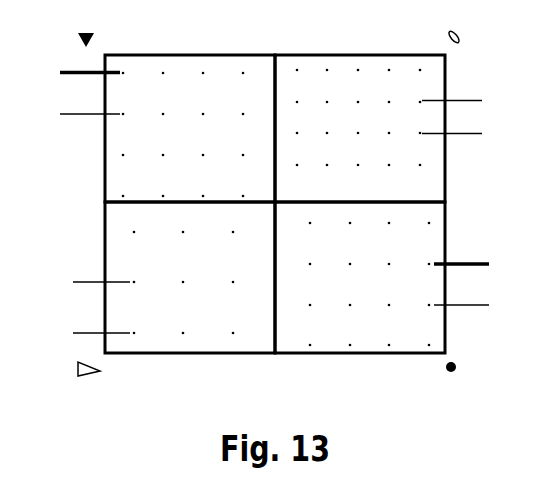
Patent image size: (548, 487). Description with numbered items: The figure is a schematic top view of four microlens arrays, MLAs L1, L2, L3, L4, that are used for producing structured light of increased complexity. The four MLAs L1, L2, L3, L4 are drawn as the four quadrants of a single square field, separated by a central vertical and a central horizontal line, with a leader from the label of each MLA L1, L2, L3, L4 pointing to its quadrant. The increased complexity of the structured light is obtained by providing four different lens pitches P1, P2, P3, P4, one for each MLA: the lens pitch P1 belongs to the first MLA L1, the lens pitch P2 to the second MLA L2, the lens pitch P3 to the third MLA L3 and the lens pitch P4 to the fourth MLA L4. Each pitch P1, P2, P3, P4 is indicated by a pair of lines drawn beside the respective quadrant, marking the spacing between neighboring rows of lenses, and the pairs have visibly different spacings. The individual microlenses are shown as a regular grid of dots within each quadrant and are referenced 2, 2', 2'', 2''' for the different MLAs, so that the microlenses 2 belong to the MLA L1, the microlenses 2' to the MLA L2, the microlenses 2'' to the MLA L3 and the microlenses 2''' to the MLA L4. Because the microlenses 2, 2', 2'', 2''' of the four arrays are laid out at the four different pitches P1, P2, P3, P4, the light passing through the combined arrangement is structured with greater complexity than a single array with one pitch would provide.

The MLA L1 is at (192, 55).
The MLA L2 is at (356, 55).
The MLA L3 is at (190, 354).
The MLA L4 is at (355, 354).
The lens pitch P1 is at (81, 94).
The lens pitch P2 is at (466, 117).
The lens pitch P3 is at (88, 307).
The lens pitch P4 is at (481, 284).
The microlenses 2 is at (153, 135).
The microlenses 2' is at (396, 132).
The microlenses 2'' is at (139, 279).
The microlenses 2''' is at (405, 277).